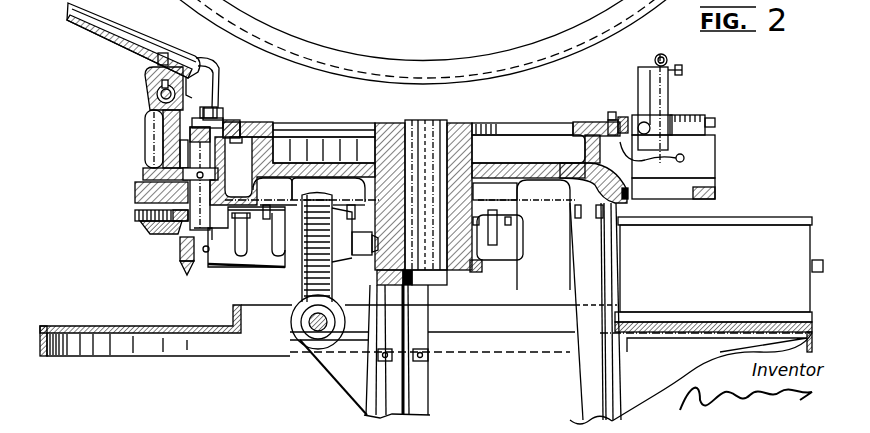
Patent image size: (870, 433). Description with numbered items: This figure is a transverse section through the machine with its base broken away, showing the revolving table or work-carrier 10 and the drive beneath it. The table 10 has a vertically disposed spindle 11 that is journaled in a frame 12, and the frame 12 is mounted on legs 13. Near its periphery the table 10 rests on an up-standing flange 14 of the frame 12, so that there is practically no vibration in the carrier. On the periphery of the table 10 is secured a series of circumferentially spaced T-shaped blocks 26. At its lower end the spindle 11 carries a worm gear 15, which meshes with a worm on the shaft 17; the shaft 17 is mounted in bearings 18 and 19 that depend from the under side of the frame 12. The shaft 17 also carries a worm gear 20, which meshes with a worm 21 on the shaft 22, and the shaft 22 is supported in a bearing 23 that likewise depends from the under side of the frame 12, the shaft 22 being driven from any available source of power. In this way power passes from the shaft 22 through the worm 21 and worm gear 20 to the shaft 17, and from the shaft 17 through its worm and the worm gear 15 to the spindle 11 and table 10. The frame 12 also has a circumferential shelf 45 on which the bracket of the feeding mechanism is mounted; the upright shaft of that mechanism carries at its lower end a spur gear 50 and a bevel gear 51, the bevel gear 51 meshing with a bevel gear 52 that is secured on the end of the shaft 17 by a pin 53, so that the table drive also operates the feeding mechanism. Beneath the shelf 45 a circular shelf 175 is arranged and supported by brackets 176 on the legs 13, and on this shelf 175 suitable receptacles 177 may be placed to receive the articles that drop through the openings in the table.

The revolving table 10 is at (262, 124).
The spindle 11 is at (433, 147).
The frame 12 is at (528, 182).
The legs 13 is at (583, 286).
The up-standing flange 14 is at (574, 150).
The worm gear 15 is at (480, 270).
The shaft 17 is at (518, 252).
The bearing 18 is at (510, 236).
The bearing 19 is at (247, 245).
The worm gear 20 is at (318, 268).
The worm 21 is at (301, 348).
The shaft 22 is at (314, 328).
The bearing 23 is at (286, 296).
The T-shaped blocks 26 is at (229, 119).
The circumferential shelf 45 is at (716, 195).
The spur gear 50 is at (135, 215).
The bevel gear 51 is at (140, 228).
The bevel gear 52 is at (180, 252).
The pin 53 is at (207, 263).
The circular shelf 175 is at (700, 322).
The brackets 176 is at (349, 385).
The receptacles 177 is at (768, 217).